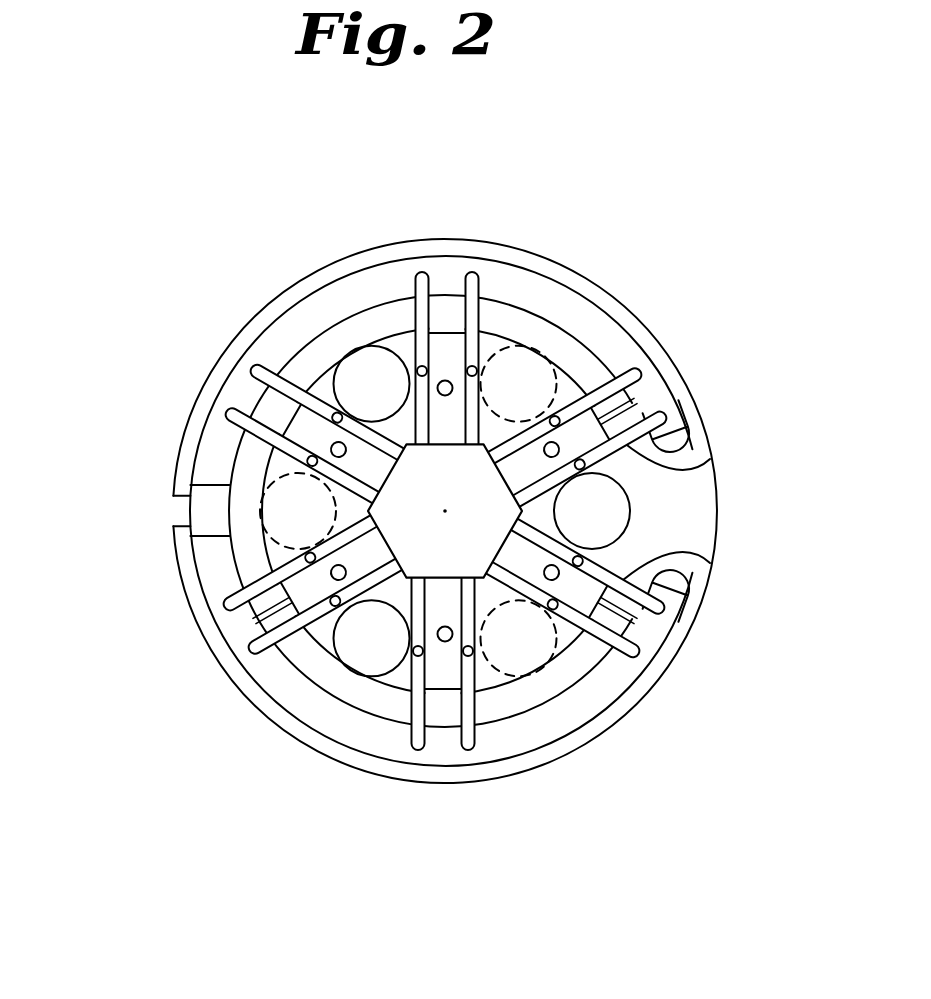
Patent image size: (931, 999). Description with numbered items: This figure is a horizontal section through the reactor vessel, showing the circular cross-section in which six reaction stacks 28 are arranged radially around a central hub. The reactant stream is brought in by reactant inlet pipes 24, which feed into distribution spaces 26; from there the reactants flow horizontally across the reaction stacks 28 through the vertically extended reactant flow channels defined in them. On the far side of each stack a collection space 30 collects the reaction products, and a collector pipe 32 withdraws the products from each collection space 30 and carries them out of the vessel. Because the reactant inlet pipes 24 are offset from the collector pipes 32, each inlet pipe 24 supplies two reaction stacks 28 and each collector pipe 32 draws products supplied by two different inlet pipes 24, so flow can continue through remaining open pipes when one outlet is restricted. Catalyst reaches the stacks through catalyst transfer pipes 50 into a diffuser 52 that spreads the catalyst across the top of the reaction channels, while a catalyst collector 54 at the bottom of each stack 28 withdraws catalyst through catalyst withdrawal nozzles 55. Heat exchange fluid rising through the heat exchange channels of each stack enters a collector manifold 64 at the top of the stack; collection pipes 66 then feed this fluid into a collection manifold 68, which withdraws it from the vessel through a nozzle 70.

The reactant inlet pipes 24 is at (527, 348).
The distribution spaces 26 is at (608, 645).
The reaction stacks 28 is at (648, 378).
The collection space 30 is at (605, 467).
The collector pipe 32 is at (365, 358).
The catalyst transfer pipes 50 is at (636, 401).
The diffuser 52 is at (450, 347).
The catalyst collector 54 is at (444, 511).
The catalyst withdrawal nozzles 55 is at (445, 510).
The collector manifold 64 is at (385, 437).
The collection pipes 66 is at (700, 560).
The collection manifold 68 is at (624, 303).
The nozzle 70 is at (207, 510).